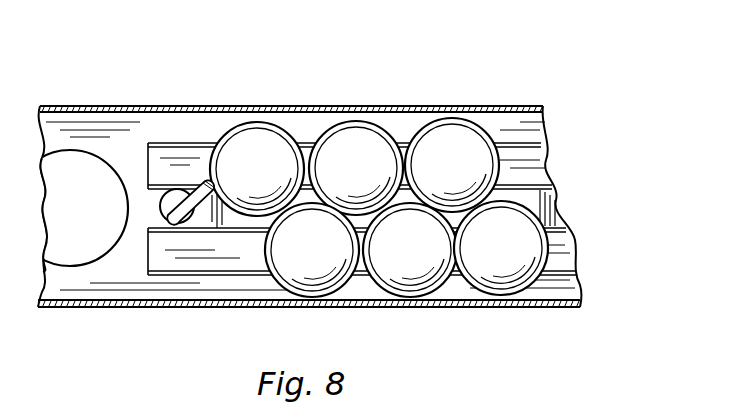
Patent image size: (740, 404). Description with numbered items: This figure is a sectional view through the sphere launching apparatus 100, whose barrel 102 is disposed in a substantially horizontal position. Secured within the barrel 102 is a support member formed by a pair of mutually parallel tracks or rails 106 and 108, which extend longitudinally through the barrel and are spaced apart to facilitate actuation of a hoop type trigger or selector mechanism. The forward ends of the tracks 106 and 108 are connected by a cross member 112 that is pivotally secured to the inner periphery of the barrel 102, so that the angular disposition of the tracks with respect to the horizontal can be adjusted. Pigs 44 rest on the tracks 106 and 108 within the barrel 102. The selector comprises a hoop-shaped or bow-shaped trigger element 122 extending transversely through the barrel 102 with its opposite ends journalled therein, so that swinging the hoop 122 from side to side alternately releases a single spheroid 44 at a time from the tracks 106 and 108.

The sphere launching apparatus 100 is at (436, 323).
The barrel 102 is at (545, 307).
The track 106 is at (213, 279).
The track 108 is at (196, 166).
The cross member 112 is at (206, 202).
The trigger element 122 is at (172, 208).
The pig 44 is at (455, 144).